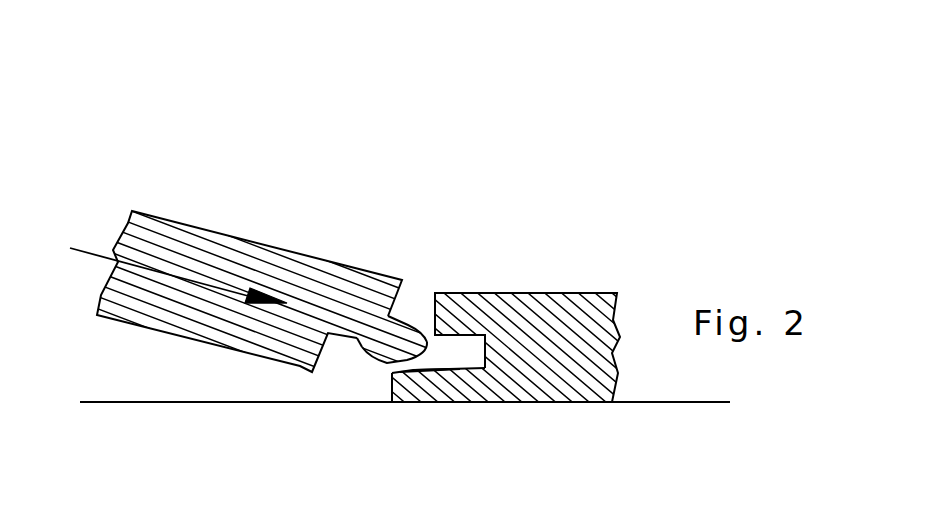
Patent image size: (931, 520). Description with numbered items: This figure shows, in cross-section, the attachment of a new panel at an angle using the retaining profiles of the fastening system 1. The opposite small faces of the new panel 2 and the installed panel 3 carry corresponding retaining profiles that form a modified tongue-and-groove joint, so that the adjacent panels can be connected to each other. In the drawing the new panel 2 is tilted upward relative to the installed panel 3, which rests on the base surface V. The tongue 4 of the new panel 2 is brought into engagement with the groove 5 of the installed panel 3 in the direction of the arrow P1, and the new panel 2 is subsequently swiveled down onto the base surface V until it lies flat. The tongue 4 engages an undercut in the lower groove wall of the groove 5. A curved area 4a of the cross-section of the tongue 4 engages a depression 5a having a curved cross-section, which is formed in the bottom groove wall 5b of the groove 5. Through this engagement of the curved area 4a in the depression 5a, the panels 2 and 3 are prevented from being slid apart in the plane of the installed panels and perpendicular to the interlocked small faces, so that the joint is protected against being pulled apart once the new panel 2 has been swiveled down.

The fastening system 1 is at (135, 117).
The new panel 2 is at (135, 243).
The installed panel 3 is at (538, 327).
The tongue 4 is at (362, 348).
The curved area 4a is at (385, 362).
The groove 5 is at (448, 350).
The depression 5a is at (435, 371).
The bottom groove wall 5b is at (430, 363).
The arrow P1 is at (152, 258).
The base surface V is at (102, 402).